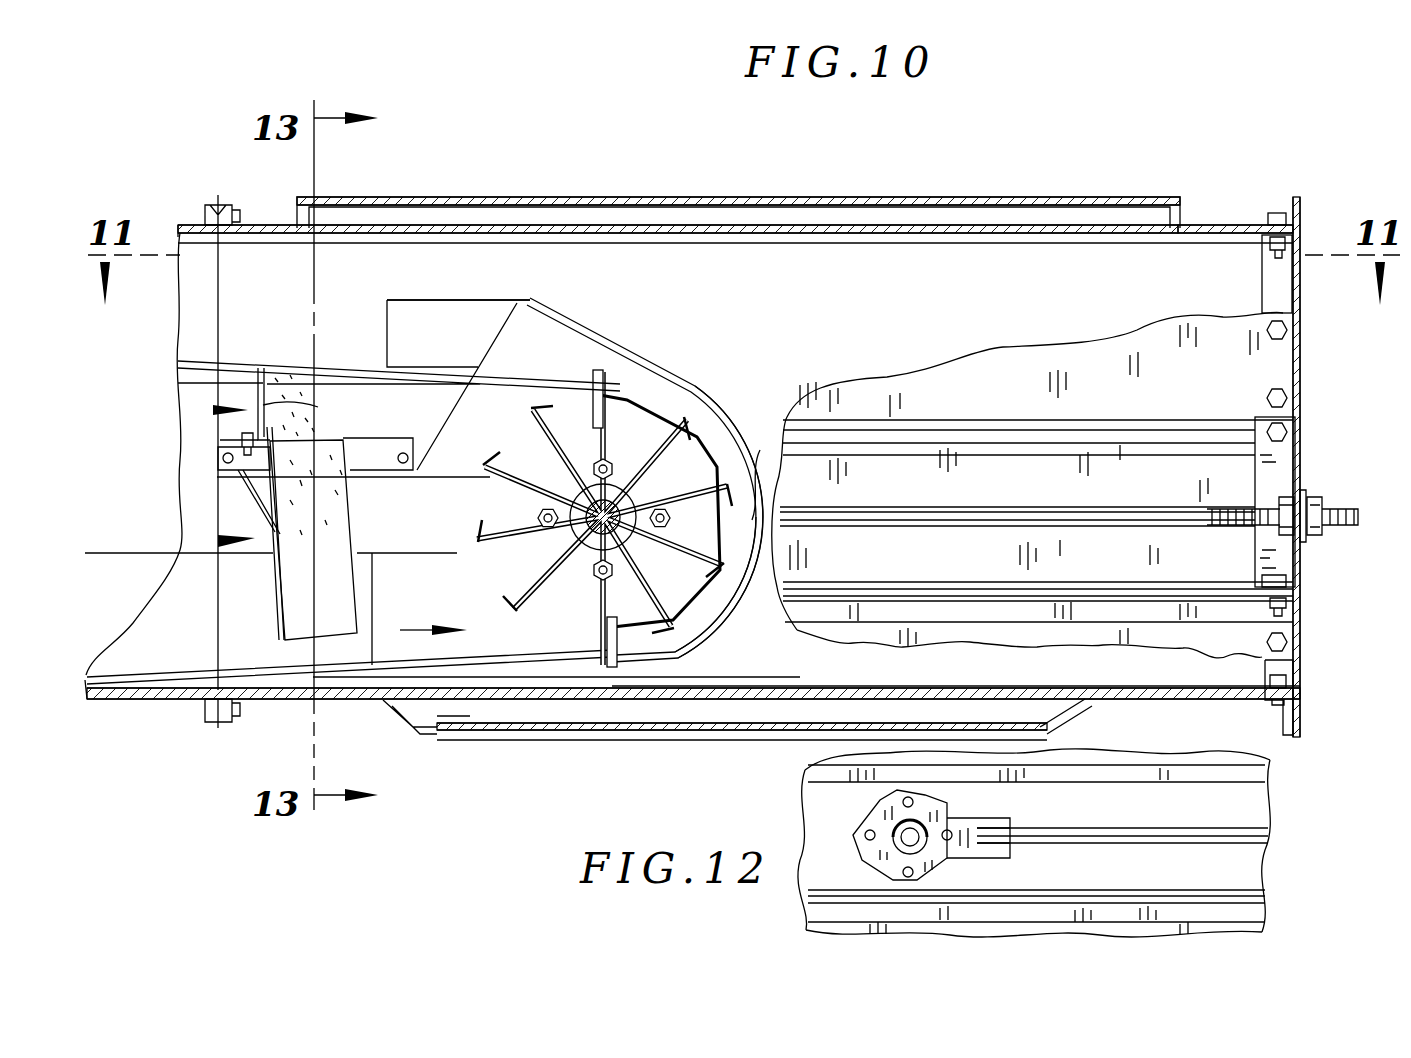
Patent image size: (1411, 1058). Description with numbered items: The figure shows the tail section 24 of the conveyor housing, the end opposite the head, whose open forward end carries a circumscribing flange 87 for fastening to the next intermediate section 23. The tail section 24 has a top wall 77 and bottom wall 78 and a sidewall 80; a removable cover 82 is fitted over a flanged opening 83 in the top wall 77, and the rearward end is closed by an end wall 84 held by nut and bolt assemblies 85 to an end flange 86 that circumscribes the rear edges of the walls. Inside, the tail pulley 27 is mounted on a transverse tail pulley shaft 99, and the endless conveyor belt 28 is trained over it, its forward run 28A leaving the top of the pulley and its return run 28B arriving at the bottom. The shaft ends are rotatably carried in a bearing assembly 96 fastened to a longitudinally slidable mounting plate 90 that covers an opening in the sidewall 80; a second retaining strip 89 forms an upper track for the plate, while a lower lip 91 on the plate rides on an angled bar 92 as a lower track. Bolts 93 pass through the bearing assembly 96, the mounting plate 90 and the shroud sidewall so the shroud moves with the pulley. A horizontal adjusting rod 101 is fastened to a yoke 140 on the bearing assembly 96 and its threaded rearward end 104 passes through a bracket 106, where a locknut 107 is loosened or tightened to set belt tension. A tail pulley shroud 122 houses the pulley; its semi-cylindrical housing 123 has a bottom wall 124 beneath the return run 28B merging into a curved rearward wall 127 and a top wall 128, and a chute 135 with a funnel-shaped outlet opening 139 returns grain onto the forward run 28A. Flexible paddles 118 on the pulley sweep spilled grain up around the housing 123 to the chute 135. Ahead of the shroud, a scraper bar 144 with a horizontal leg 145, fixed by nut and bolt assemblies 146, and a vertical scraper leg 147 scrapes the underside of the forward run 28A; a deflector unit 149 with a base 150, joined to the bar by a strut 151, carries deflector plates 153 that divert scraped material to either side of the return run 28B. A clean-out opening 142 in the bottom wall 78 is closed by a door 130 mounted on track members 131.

In FIG. 10, the intermediate section 23 is at (192, 222).
In FIG. 10, the tail section 24 is at (1030, 165).
In FIG. 10, the tail pulley 27 is at (652, 392).
In FIG. 10, the conveyor belt 28 is at (690, 392).
In FIG. 10, the forward run 28A is at (288, 357).
In FIG. 10, the return run 28B is at (160, 680).
In FIG. 10, the top wall 77 is at (1205, 225).
In FIG. 10, the bottom wall 78 is at (290, 700).
In FIG. 10, the sidewall 80 is at (1160, 390).
In FIG. 12, the sidewall 80 is at (1247, 930).
In FIG. 10, the removable cover 82 is at (677, 197).
In FIG. 10, the flanged opening 83 is at (928, 240).
In FIG. 10, the end wall 84 is at (1300, 294).
In FIG. 10, the nut and bolt assemblies 85 is at (1272, 218).
In FIG. 10, the end flange 86 is at (1297, 197).
In FIG. 10, the circumscribing flange 87 is at (218, 725).
In FIG. 10, the second retaining strip 89 is at (1018, 420).
In FIG. 12, the second retaining strip 89 is at (1140, 777).
In FIG. 10, the mounting plate 90 is at (888, 490).
In FIG. 12, the mounting plate 90 is at (1247, 877).
In FIG. 10, the lower lip 91 is at (950, 582).
In FIG. 12, the lower lip 91 is at (1043, 897).
In FIG. 10, the angled bar 92 is at (1100, 605).
In FIG. 12, the angled bar 92 is at (1130, 913).
In FIG. 12, the bolts 93 is at (915, 800).
In FIG. 12, the bearing assembly 96 is at (870, 812).
In FIG. 10, the tail pulley shaft 99 is at (508, 574).
In FIG. 12, the tail pulley shaft 99 is at (920, 842).
In FIG. 10, the adjusting rod 101 is at (1048, 507).
In FIG. 12, the adjusting rod 101 is at (1138, 830).
In FIG. 10, the rearward end 104 is at (1338, 510).
In FIG. 10, the bracket 106 is at (1290, 459).
In FIG. 10, the locknut 107 is at (1275, 500).
In FIG. 10, the flexible paddles 118 is at (605, 370).
In FIG. 10, the tail pulley shroud 122 is at (765, 400).
In FIG. 10, the semi-cylindrical housing 123 is at (677, 663).
In FIG. 10, the bottom wall 124 is at (550, 683).
In FIG. 10, the curved rearward wall 127 is at (740, 610).
In FIG. 10, the top wall 128 is at (570, 325).
In FIG. 10, the door 130 is at (460, 735).
In FIG. 10, the track members 131 is at (395, 712).
In FIG. 10, the chute 135 is at (470, 295).
In FIG. 10, the outlet opening 139 is at (410, 328).
In FIG. 12, the yoke 140 is at (993, 817).
In FIG. 10, the clean-out opening 142 is at (945, 693).
In FIG. 10, the scraper bar 144 is at (213, 410).
In FIG. 10, the horizontal leg 145 is at (225, 450).
In FIG. 10, the nut and bolt assemblies 146 is at (233, 440).
In FIG. 10, the vertical scraper leg 147 is at (310, 412).
In FIG. 10, the deflector unit 149 is at (218, 540).
In FIG. 10, the base 150 is at (275, 611).
In FIG. 10, the strut 151 is at (262, 500).
In FIG. 10, the deflector plates 153 is at (327, 527).